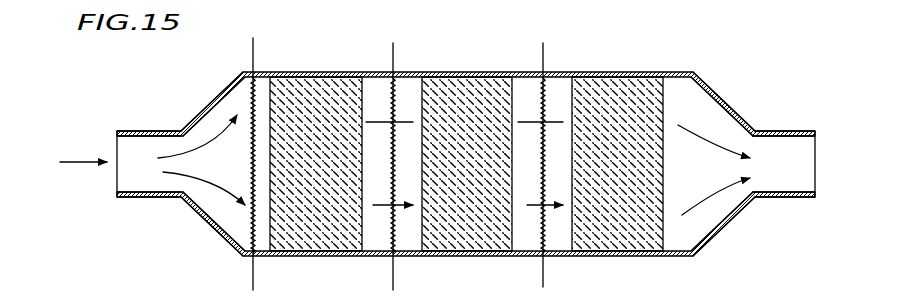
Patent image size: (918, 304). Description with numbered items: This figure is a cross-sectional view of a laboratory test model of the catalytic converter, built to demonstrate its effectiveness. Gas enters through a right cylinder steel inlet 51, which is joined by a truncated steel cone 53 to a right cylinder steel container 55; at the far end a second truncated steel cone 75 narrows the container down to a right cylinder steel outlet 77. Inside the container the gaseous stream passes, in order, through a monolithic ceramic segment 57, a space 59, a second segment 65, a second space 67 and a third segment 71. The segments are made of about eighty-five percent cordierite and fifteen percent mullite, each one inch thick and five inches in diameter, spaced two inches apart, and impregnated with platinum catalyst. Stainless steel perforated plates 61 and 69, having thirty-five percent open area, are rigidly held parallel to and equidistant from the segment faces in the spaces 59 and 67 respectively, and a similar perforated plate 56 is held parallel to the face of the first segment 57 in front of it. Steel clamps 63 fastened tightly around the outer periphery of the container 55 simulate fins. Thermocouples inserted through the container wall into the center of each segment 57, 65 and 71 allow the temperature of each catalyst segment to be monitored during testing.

The inlet 51 is at (145, 131).
The truncated steel cone 53 is at (207, 105).
The container 55 is at (247, 70).
The perforated plate 56 is at (252, 210).
The monolithic ceramic segment 57 is at (302, 88).
The space 59 is at (383, 240).
The perforated plate 61 is at (397, 83).
The steel clamps 63 is at (253, 272).
The segment 65 is at (470, 93).
The space 67 is at (555, 93).
The perforated plate 69 is at (550, 233).
The segment 71 is at (628, 88).
The truncated steel cone 75 is at (718, 232).
The outlet 77 is at (790, 197).